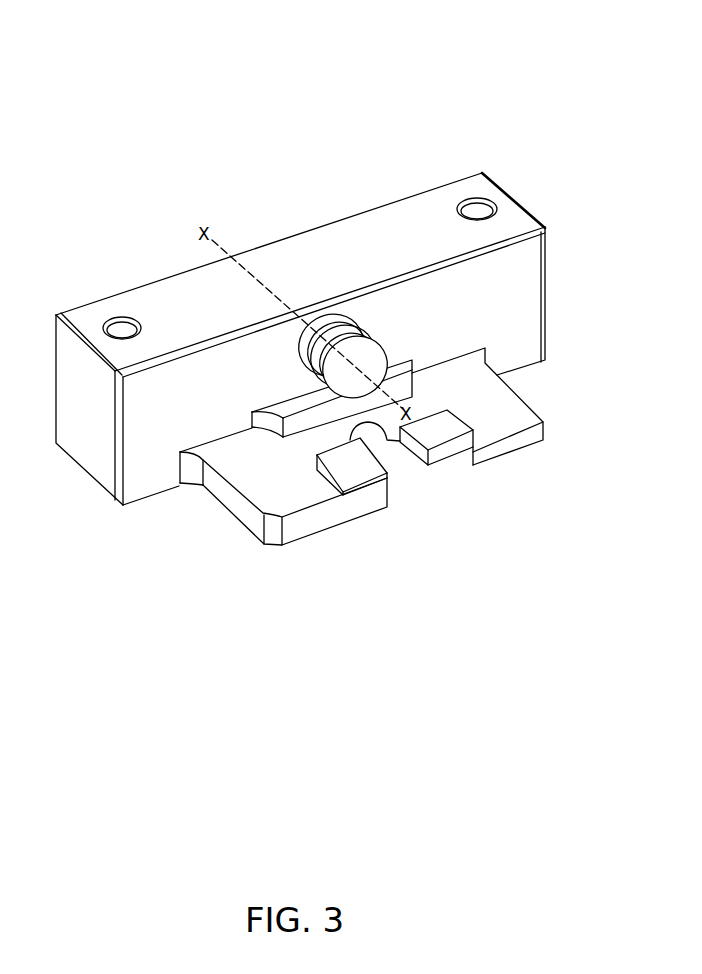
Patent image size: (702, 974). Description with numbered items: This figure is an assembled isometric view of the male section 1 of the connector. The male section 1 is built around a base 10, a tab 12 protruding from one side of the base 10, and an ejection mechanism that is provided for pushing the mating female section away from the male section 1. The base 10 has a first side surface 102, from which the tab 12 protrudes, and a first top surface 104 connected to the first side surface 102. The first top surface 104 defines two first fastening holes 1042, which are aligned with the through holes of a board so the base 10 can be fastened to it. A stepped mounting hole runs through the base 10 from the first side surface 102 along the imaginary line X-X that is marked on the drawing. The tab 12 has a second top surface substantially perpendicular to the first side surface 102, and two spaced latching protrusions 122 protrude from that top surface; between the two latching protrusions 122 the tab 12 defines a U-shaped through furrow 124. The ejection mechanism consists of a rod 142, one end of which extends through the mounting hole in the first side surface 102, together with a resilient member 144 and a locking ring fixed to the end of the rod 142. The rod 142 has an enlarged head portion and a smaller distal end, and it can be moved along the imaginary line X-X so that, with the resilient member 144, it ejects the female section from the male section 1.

The male section 1 is at (510, 63).
The base 10 is at (330, 342).
The first side surface 102 is at (525, 303).
The first top surface 104 is at (360, 232).
The first fastening holes 1042 is at (477, 209).
The tab 12 is at (361, 467).
The latching protrusions 122 is at (437, 428).
The U-shaped through furrow 124 is at (387, 441).
The rod 142 is at (305, 360).
The resilient member 144 is at (322, 332).